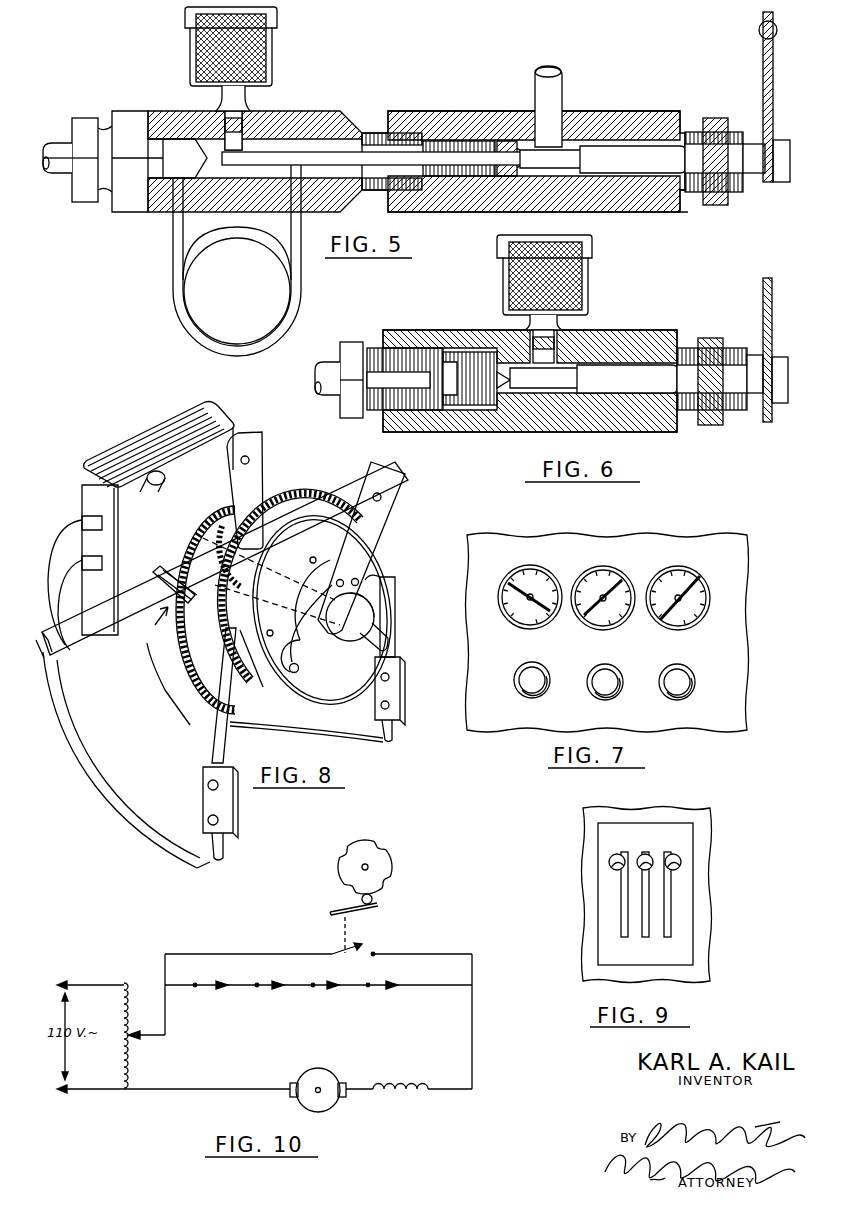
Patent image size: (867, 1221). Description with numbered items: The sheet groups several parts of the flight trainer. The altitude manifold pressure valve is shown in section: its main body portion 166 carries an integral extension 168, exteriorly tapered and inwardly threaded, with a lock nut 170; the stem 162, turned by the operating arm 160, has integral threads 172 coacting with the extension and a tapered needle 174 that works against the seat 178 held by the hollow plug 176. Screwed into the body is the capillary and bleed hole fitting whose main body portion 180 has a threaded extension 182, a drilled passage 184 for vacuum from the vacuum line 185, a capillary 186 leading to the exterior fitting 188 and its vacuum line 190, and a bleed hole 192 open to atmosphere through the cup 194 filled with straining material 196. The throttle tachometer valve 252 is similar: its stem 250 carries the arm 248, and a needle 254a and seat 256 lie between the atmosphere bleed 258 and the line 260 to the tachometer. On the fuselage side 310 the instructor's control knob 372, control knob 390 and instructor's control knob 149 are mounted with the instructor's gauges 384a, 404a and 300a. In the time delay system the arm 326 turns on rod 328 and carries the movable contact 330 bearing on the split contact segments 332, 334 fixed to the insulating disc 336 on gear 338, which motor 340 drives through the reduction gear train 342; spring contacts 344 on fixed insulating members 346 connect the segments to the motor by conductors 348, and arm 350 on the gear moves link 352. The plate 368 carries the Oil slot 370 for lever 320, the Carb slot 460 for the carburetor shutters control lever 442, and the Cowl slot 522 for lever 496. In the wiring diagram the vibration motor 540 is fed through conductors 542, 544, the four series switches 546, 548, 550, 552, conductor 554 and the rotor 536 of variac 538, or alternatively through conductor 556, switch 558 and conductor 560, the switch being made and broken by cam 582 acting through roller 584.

In FIG. 5, the operating arm 160 is at (768, 63).
In FIG. 5, the stem 162 is at (753, 174).
In FIG. 5, the main body portion 166 is at (617, 204).
In FIG. 5, the extension 168 is at (688, 201).
In FIG. 5, the lock nut 170 is at (717, 122).
In FIG. 5, the threads 172 is at (700, 147).
In FIG. 5, the needle 174 is at (553, 160).
In FIG. 5, the plug 176 is at (458, 143).
In FIG. 5, the seat 178 is at (510, 143).
In FIG. 5, the main body portion of the capillary and bleed hole fitting assembly 180 is at (320, 122).
In FIG. 5, the threaded extension 182 is at (407, 144).
In FIG. 5, the drilled passage 184 is at (353, 157).
In FIG. 5, the vacuum line 185 is at (550, 78).
In FIG. 5, the capillary 186 is at (178, 287).
In FIG. 5, the exterior fitting 188 is at (83, 122).
In FIG. 5, the vacuum line 190 is at (57, 147).
In FIG. 5, the bleed hole 192 is at (247, 118).
In FIG. 5, the cup 194 is at (192, 40).
In FIG. 5, the straining material 196 is at (252, 53).
In FIG. 6, the arm 248 is at (770, 327).
In FIG. 6, the stem 250 is at (755, 370).
In FIG. 6, the throttle tachometer valve 252 is at (582, 345).
In FIG. 6, the needle 254a is at (522, 380).
In FIG. 6, the seat 256 is at (503, 362).
In FIG. 6, the atmosphere bleed 258 is at (505, 273).
In FIG. 6, the line 260 is at (325, 367).
In FIG. 7, the side of the trainer fuselage 310 is at (625, 538).
In FIG. 7, the instructor's fuel pressure gauge 384a is at (552, 571).
In FIG. 7, the instructor's oil pressure gauge 404a is at (627, 571).
In FIG. 7, the gauge 300a is at (703, 571).
In FIG. 7, the instructor's control knob 372 is at (518, 670).
In FIG. 7, the control knob 390 is at (593, 670).
In FIG. 7, the instructor's control knob 149 is at (668, 670).
In FIG. 8, the arm 326 is at (370, 547).
In FIG. 8, the rod 328 is at (358, 648).
In FIG. 8, the movable contact 330 is at (282, 670).
In FIG. 8, the split contact segment 332 is at (313, 543).
In FIG. 8, the split contact segment 334 is at (317, 667).
In FIG. 8, the insulating disc 336 is at (297, 533).
In FIG. 8, the gear 338 is at (269, 532).
In FIG. 8, the motor 340 is at (130, 447).
In FIG. 8, the intermediate reduction gear train 342 is at (147, 643).
In FIG. 8, the spring contacts 344 is at (392, 618).
In FIG. 8, the fixed insulating members 346 is at (375, 700).
In FIG. 8, the conductors 348 is at (80, 727).
In FIG. 8, the arm 350 is at (262, 478).
In FIG. 8, the link 352 is at (147, 537).
In FIG. 9, the plate 368 is at (695, 808).
In FIG. 9, the slot 370 is at (644, 937).
In FIG. 9, the lever 320 is at (608, 860).
In FIG. 9, the carburetor shutters control lever 442 is at (641, 848).
In FIG. 9, the lever 496 is at (683, 862).
In FIG. 9, the slot 460 is at (610, 933).
In FIG. 9, the slot 522 is at (672, 930).
In FIG. 10, the rotor of variac 536 is at (140, 1033).
In FIG. 10, the variac 538 is at (130, 1063).
In FIG. 10, the motor 540 is at (365, 1075).
In FIG. 10, the conductor 542 is at (238, 1088).
In FIG. 10, the conductor 544 is at (473, 1007).
In FIG. 10, the series switch 546 is at (380, 987).
In FIG. 10, the series switch 548 is at (323, 987).
In FIG. 10, the series switch 550 is at (275, 987).
In FIG. 10, the series switch 552 is at (222, 987).
In FIG. 10, the conductor 554 is at (165, 1015).
In FIG. 10, the conductor 556 is at (288, 943).
In FIG. 10, the switch 558 is at (343, 950).
In FIG. 10, the conductor 560 is at (427, 955).
In FIG. 10, the cam 582 is at (338, 870).
In FIG. 10, the roller 584 is at (377, 908).